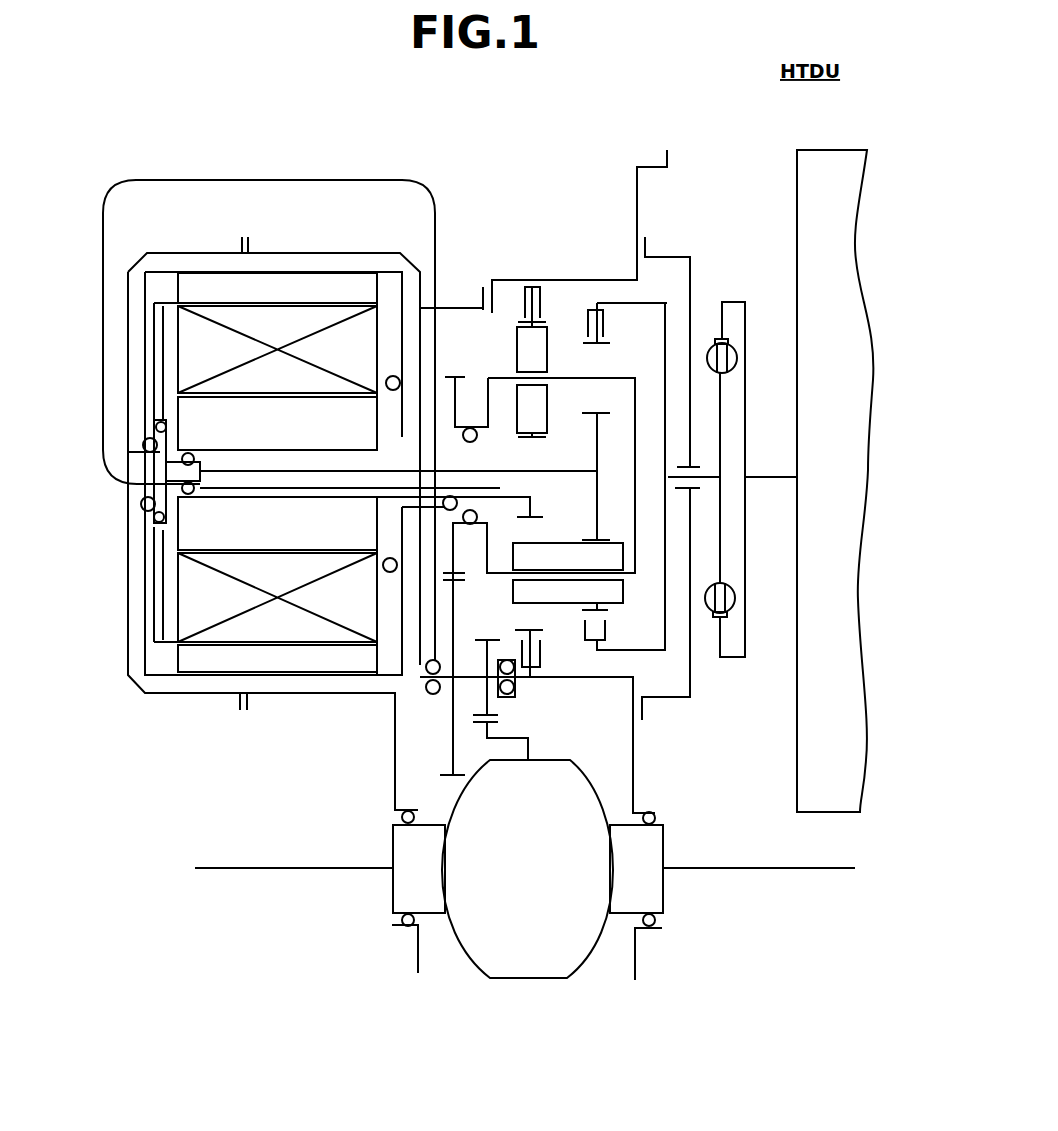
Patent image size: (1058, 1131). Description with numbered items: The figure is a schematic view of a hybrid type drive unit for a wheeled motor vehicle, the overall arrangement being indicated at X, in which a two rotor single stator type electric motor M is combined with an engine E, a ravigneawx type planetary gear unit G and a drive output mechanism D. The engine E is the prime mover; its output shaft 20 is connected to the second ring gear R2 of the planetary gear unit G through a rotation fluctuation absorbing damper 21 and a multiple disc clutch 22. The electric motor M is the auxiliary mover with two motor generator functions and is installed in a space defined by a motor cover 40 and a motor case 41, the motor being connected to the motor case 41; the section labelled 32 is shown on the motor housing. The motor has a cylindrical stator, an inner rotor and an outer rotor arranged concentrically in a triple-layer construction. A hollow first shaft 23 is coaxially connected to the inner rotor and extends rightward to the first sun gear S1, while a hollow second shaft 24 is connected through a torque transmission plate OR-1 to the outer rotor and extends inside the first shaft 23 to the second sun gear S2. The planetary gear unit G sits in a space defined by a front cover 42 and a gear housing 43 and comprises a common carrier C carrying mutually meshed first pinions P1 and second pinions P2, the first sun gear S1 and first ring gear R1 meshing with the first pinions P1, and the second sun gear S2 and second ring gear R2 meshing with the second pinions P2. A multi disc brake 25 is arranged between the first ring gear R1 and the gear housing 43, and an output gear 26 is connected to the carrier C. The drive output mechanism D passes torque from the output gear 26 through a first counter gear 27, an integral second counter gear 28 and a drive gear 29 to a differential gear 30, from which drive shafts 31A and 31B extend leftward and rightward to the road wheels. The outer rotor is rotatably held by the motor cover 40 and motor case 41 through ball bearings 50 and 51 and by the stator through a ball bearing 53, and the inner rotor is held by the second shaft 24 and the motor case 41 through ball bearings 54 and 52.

The hybrid transmission drive unit X is at (290, 179).
The torque transmission plate OR-1 is at (141, 357).
The motor cover 40 is at (205, 253).
The motor case 32 is at (230, 272).
The two rotor single stator type electric motor M is at (302, 252).
The motor case 41 is at (360, 253).
The output gear 26 is at (447, 375).
The first ring gear R1 is at (545, 352).
The multi disc brake 25 is at (518, 300).
The ravigneawx type planetary gear unit G is at (513, 300).
The first pinions P1 is at (555, 302).
The second sun gear S2 is at (585, 410).
The gear housing 43 is at (597, 303).
The multiple disc clutch 22 is at (605, 322).
The second ring gear R2 is at (605, 372).
The front cover 42 is at (692, 268).
The rotation fluctuation absorbing damper 21 is at (715, 340).
The engine E is at (787, 208).
The first shaft 23 is at (470, 471).
The second shaft 24 is at (457, 488).
The output shaft 20 is at (768, 476).
The ball bearing 52 is at (540, 510).
The first sun gear S1 is at (600, 541).
The common carrier C is at (636, 533).
The second pinions P2 is at (560, 605).
The drive gear 29 is at (498, 723).
The drive shaft 31A is at (322, 867).
The drive shaft 31B is at (750, 867).
The drive output mechanism D is at (418, 753).
The second counter gear 28 is at (443, 593).
The first counter gear 27 is at (455, 627).
The ball bearing 51 is at (386, 573).
The ball bearing 50 is at (141, 503).
The ball bearing 53 is at (158, 522).
The ball bearing 54 is at (186, 494).
The differential gear 30 is at (528, 869).